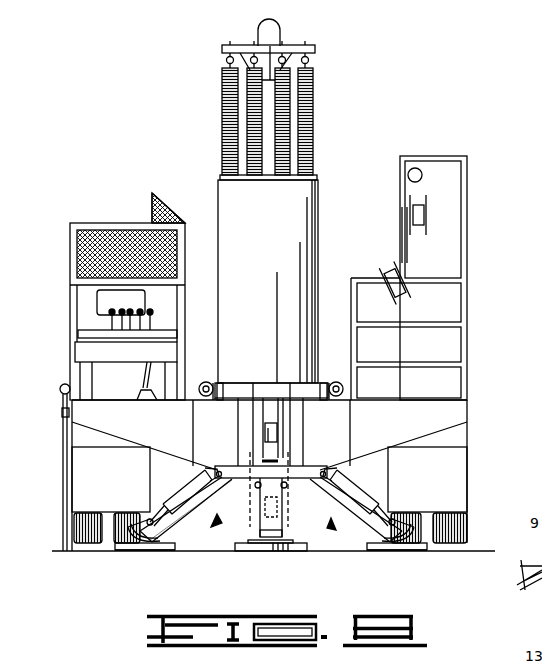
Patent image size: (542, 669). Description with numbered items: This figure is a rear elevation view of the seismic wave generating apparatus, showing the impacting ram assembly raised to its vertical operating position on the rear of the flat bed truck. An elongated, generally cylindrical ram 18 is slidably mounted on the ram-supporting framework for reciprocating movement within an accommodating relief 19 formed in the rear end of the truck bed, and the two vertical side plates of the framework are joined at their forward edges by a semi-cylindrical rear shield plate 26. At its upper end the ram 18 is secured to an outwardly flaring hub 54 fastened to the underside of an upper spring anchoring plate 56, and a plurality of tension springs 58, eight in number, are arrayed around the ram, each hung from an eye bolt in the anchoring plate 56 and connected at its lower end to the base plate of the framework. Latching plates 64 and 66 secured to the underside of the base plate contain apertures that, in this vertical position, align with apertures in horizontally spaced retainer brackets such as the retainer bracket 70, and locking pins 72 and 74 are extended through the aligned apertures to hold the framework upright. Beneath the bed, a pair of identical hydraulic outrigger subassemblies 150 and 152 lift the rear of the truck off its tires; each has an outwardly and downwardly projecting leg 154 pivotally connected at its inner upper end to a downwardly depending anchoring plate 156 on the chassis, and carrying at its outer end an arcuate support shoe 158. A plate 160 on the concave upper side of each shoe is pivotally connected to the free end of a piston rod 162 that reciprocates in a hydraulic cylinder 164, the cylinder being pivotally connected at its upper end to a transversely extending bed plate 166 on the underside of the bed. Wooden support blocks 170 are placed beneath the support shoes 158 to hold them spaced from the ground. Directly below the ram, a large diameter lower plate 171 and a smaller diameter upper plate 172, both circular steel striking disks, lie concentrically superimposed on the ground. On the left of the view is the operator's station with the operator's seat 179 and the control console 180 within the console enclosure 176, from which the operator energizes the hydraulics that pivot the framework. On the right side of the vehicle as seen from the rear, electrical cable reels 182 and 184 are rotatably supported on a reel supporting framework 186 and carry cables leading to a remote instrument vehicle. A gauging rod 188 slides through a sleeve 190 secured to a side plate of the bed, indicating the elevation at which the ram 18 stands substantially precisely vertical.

The ram 18 is at (270, 390).
The accommodating relief 19 is at (303, 422).
The semi-cylindrical rear shield plate 26 is at (276, 237).
The outwardly flaring hub 54 is at (277, 44).
The upper spring anchoring plate 56 is at (224, 49).
The tension springs 58 is at (310, 114).
The latching plate 64 is at (217, 403).
The latching plate 66 is at (318, 403).
The retainer bracket 70 is at (219, 385).
The locking pin 72 is at (205, 382).
The locking pin 74 is at (336, 382).
The hydraulic outrigger subassembly 150 is at (216, 526).
The hydraulic outrigger subassembly 152 is at (330, 530).
The leg 154 is at (188, 528).
The anchoring plate 156 is at (273, 503).
The arcuate support shoe 158 is at (143, 548).
The plate 160 is at (133, 545).
The piston rod 162 is at (167, 503).
The hydraulic cylinder 164 is at (200, 477).
The bed plate 166 is at (226, 468).
The wooden support block 170 is at (150, 552).
The lower plate 171 is at (258, 550).
The upper plate 172 is at (280, 552).
The control console 176 is at (77, 223).
The operator's seat 179 is at (108, 297).
The control console 180 is at (98, 333).
The electrical cable reel 182 is at (390, 266).
The electrical cable reel 184 is at (411, 207).
The reel supporting framework 186 is at (468, 240).
The gauging rod 188 is at (55, 447).
The sleeve 190 is at (60, 410).